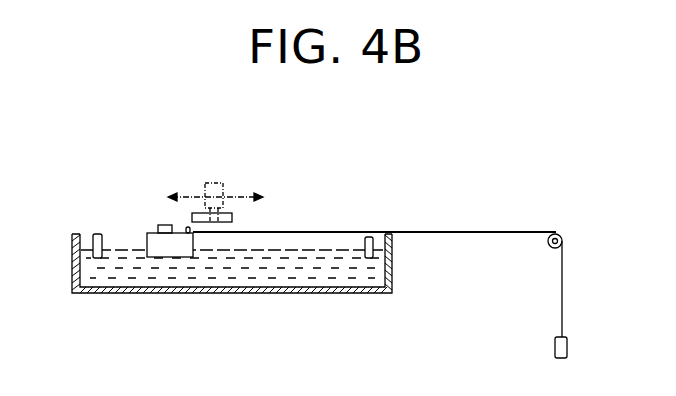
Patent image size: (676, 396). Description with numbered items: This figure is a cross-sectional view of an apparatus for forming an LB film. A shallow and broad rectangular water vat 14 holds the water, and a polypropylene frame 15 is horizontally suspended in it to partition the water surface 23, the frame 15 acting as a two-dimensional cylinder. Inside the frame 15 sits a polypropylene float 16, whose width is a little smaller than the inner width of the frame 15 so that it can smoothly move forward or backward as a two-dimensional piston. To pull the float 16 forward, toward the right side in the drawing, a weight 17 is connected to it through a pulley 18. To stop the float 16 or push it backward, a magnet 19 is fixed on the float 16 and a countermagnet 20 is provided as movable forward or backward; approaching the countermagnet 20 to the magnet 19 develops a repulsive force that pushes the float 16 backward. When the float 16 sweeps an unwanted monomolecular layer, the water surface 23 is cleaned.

The water vat 14 is at (97, 293).
The polypropylene frame 15 is at (97, 233).
The polypropylene float 16 is at (170, 245).
The weight 17 is at (567, 346).
The pulley 18 is at (558, 233).
The magnet 19 is at (159, 225).
The countermagnet 20 is at (232, 217).
The water surface 23 is at (347, 237).